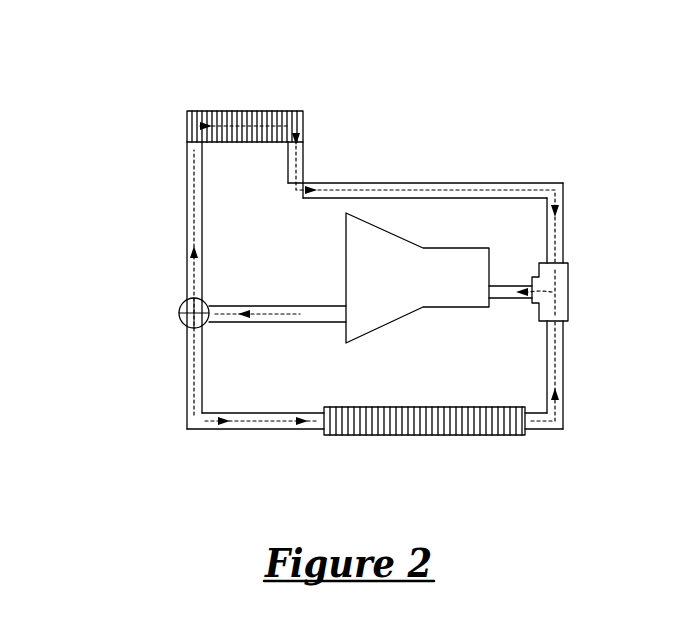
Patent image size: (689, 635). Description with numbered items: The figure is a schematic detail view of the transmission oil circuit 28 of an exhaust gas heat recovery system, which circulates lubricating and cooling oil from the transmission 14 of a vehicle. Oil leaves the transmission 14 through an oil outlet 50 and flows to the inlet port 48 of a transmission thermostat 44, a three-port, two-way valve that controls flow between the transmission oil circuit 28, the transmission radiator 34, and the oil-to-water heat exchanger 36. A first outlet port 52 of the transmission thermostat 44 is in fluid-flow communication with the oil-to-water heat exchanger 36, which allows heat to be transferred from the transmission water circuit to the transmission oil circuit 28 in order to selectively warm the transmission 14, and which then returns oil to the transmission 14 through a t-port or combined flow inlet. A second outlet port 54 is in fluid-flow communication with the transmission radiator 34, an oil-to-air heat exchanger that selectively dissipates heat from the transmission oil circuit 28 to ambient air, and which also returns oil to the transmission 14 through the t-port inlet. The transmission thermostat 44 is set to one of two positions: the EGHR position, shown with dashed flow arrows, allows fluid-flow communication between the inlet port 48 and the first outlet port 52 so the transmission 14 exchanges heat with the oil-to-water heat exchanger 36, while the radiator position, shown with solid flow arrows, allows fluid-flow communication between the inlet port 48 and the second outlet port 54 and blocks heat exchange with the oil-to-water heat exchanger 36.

The transmission oil circuit 28 is at (155, 452).
The oil-to-water heat exchanger 36 is at (236, 110).
The transmission radiator 34 is at (413, 437).
The transmission 14 is at (448, 248).
The oil outlet 50 is at (338, 322).
The transmission thermostat 44 is at (179, 313).
The first outlet port 52 is at (190, 293).
The inlet port 48 is at (210, 308).
The second outlet port 54 is at (195, 327).